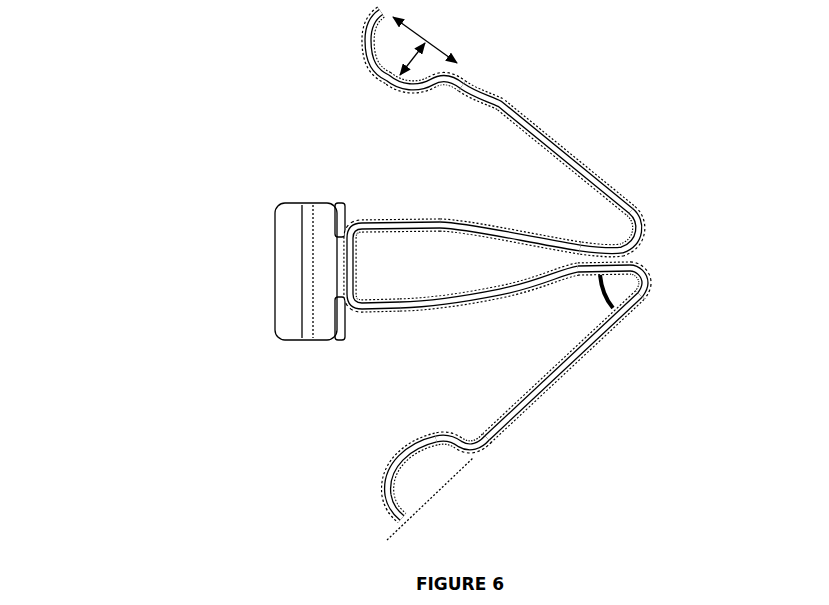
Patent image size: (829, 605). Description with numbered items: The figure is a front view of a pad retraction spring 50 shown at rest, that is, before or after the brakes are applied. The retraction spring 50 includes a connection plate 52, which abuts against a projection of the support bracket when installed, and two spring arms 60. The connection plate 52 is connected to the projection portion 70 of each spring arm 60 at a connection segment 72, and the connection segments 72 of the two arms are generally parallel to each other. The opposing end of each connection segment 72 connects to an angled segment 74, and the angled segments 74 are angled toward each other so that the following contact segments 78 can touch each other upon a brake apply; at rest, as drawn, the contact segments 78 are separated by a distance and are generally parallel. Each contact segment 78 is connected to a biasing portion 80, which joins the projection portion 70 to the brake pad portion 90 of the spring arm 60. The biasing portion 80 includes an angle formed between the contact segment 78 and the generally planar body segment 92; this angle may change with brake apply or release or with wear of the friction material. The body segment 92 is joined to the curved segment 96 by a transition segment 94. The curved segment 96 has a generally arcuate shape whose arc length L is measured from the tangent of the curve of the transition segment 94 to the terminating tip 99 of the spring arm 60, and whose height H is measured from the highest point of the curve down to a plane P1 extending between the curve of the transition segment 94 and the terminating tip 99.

The retraction spring 50 is at (115, 185).
The connection plate 52 is at (322, 270).
The spring arm 60 is at (481, 101).
The projection portion 70 is at (343, 228).
The connection segment 72 is at (397, 228).
The angled segment 74 is at (485, 231).
The contact segment 78 is at (588, 254).
The biasing portion 80 is at (597, 162).
The brake pad portion 90 is at (561, 138).
The body segment 92 is at (540, 402).
The transition segment 94 is at (473, 453).
The curved segment 96 is at (373, 80).
The terminating tip 99 is at (372, 14).
The height H is at (407, 60).
The length L is at (425, 35).
The plane P1 is at (435, 500).